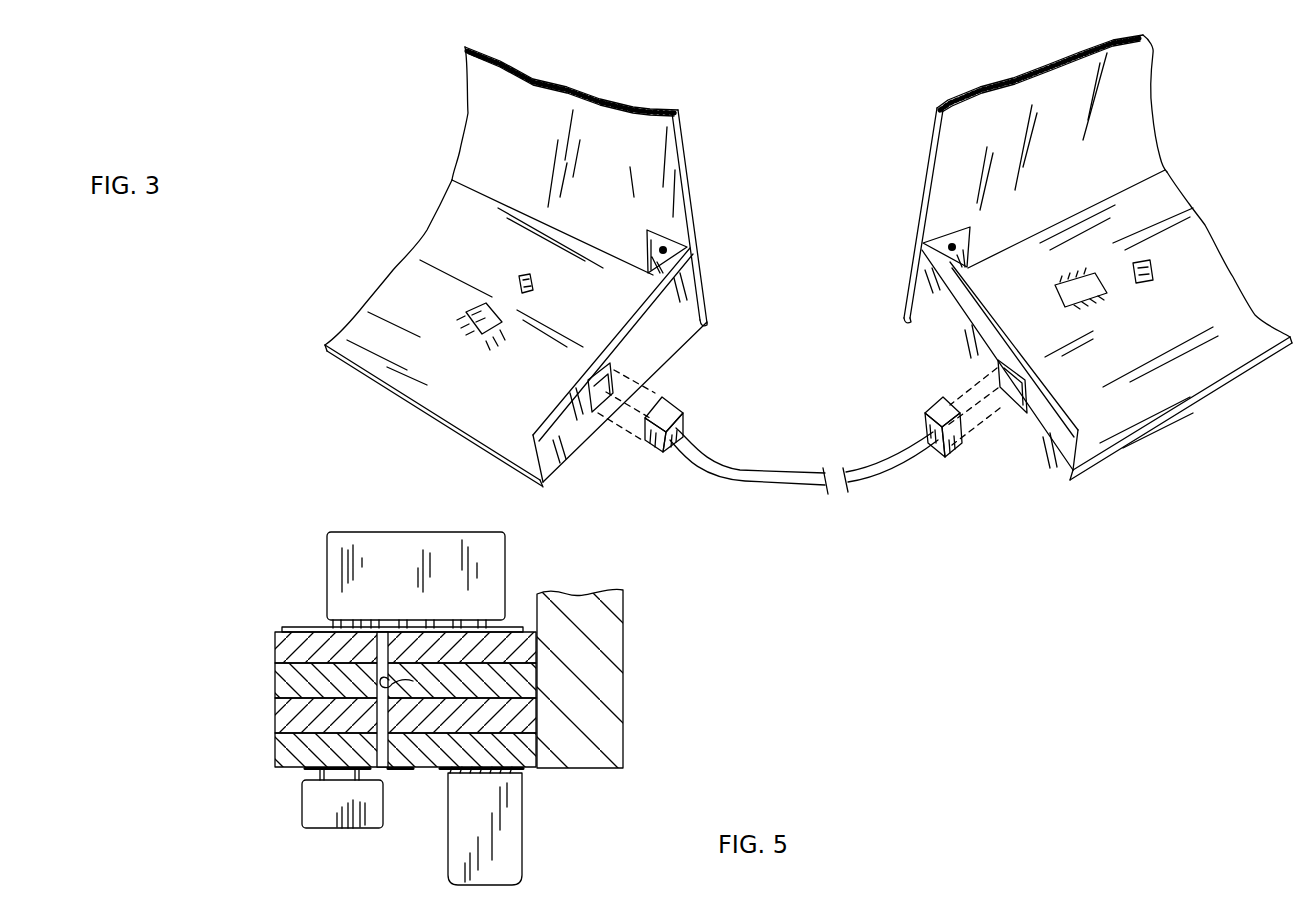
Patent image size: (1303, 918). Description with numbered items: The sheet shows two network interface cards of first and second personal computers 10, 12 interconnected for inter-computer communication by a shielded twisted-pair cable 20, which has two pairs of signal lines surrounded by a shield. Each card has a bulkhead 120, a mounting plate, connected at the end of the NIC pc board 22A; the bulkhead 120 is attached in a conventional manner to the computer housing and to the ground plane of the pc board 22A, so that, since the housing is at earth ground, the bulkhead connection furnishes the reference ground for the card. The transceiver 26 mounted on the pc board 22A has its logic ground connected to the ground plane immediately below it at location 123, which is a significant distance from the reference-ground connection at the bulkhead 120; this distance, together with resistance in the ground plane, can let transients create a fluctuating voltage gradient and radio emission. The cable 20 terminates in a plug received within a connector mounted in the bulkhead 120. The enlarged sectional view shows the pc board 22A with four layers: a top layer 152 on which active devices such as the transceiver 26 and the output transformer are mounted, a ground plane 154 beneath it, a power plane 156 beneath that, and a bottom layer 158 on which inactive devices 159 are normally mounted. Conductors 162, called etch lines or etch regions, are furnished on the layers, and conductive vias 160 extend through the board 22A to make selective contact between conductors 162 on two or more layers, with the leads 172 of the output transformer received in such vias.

In FIG. 3, the first computer 10 is at (409, 137).
In FIG. 3, the second computer 12 is at (1185, 132).
In FIG. 3, the communication link 20 is at (762, 468).
In FIG. 5, the NIC pc board 22A is at (268, 784).
In FIG. 3, the transceiver 26 is at (463, 332).
In FIG. 5, the bulkhead 120 is at (615, 688).
In FIG. 3, the location 123 is at (482, 350).
In FIG. 5, the top layer 152 is at (274, 647).
In FIG. 5, the ground plane 154 is at (283, 683).
In FIG. 5, the power plane 156 is at (282, 709).
In FIG. 5, the bottom layer 158 is at (283, 757).
In FIG. 5, the inactive devices 159 is at (333, 829).
In FIG. 5, the conductive vias 160 is at (382, 752).
In FIG. 5, the conductors 162 is at (283, 630).
In FIG. 5, the leads 172 is at (455, 613).